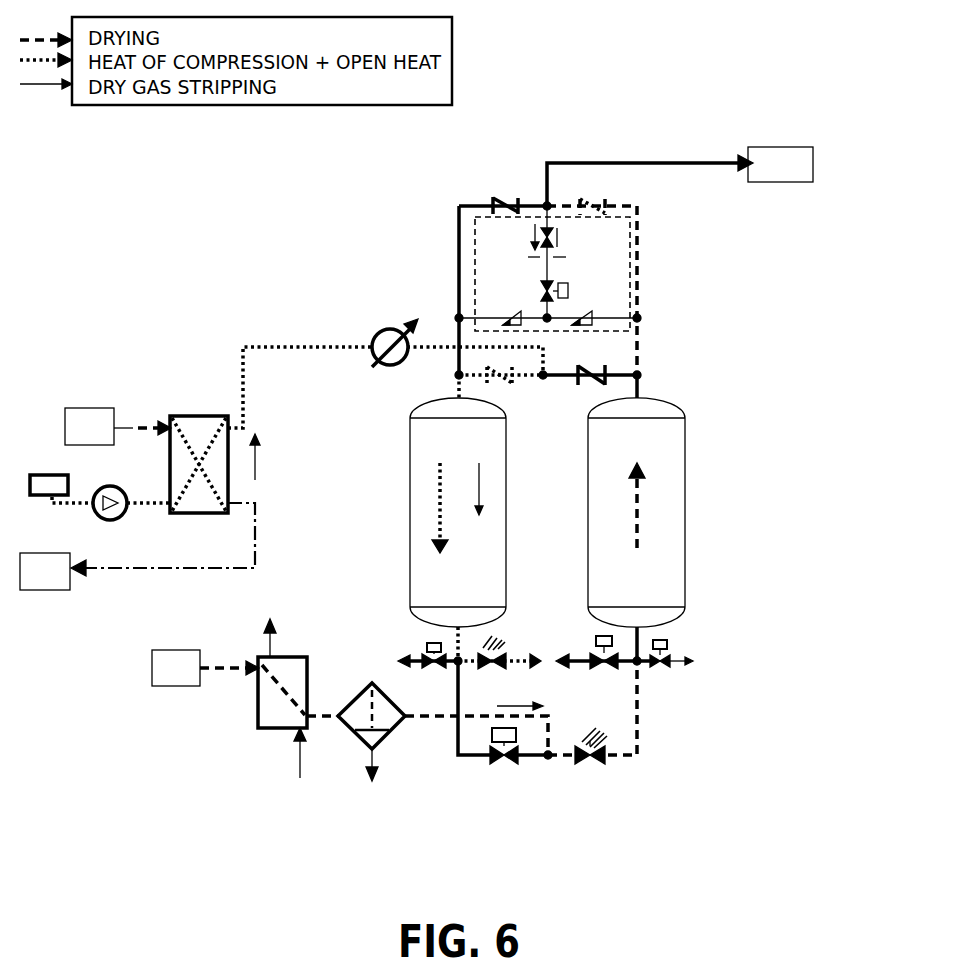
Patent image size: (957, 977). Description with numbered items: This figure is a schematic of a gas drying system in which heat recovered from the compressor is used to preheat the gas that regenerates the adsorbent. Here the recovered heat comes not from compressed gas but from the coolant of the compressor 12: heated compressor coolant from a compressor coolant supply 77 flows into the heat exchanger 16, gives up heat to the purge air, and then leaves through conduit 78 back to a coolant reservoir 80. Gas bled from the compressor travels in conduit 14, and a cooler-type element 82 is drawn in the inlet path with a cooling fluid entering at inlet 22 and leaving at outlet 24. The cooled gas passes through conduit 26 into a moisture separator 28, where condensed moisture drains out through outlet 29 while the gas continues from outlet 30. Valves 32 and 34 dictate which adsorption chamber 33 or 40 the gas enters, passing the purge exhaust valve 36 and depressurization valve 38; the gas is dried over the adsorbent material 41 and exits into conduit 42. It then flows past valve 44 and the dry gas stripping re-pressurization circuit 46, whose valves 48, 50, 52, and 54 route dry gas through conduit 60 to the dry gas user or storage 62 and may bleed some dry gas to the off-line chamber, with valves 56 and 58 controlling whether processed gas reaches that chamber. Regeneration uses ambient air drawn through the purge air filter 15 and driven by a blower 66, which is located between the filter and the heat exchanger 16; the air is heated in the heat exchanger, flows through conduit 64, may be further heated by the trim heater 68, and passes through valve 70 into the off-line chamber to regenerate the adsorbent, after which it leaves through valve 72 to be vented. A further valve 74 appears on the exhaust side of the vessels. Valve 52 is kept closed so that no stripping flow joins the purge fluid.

The compressor 12 is at (176, 668).
The conduit 14 is at (133, 428).
The purge air filter 15 is at (30, 488).
The heat exchanger 16 is at (200, 416).
The trim cooler inlet 22 is at (303, 775).
The trim cooler outlet 24 is at (272, 648).
The conduit 26 is at (322, 716).
The moisture separator 28 is at (388, 733).
The outlet 29 is at (375, 775).
The outlet 30 is at (405, 716).
The valve 32 is at (505, 762).
The adsorption chamber 33 is at (420, 483).
The valve 34 is at (595, 762).
The purge exhaust valve 36 is at (596, 648).
The depressurization valve 38 is at (672, 656).
The adsorption chamber 40 is at (668, 475).
The adsorbent material 41 is at (425, 573).
The conduit 42 is at (637, 390).
The valve 44 is at (605, 372).
The dry gas stripping re-pressurization circuit 46 is at (632, 247).
The valve 48 is at (590, 312).
The valve 50 is at (503, 318).
The valve 52 is at (540, 290).
The valve 54 is at (558, 230).
The valve 56 is at (582, 200).
The valve 58 is at (495, 198).
The conduit 60 is at (680, 163).
The dry gas user or storage 62 is at (780, 164).
The conduit 64 is at (245, 412).
The blower 66 is at (112, 522).
The trim heater 68 is at (383, 329).
The valve 70 is at (512, 387).
The valve 72 is at (508, 655).
The vent valve 74 is at (428, 655).
The compressor coolant supply 77 is at (89, 426).
The conduit 78 is at (258, 510).
The coolant reservoir 80 is at (45, 571).
The aftercooler 82 is at (258, 700).